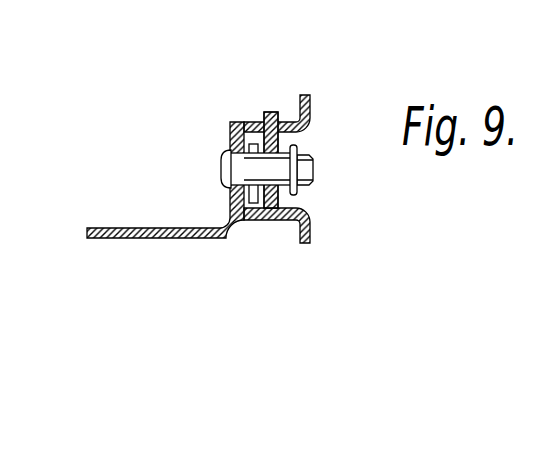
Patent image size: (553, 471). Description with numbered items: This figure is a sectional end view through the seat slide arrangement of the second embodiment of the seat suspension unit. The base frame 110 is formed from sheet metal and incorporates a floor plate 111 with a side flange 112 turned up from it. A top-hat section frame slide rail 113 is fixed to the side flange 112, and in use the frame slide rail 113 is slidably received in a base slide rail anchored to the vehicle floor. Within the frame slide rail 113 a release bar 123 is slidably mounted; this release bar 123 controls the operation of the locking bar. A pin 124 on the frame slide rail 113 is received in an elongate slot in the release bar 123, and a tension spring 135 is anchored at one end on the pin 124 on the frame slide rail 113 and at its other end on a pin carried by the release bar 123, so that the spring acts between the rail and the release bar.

The base frame 110 is at (112, 217).
The floor plate 111 is at (109, 246).
The side flange 112 is at (224, 131).
The frame slide rail 113 is at (322, 109).
The release bar 123 is at (276, 115).
The pin 124 is at (313, 170).
The tension spring 135 is at (297, 194).